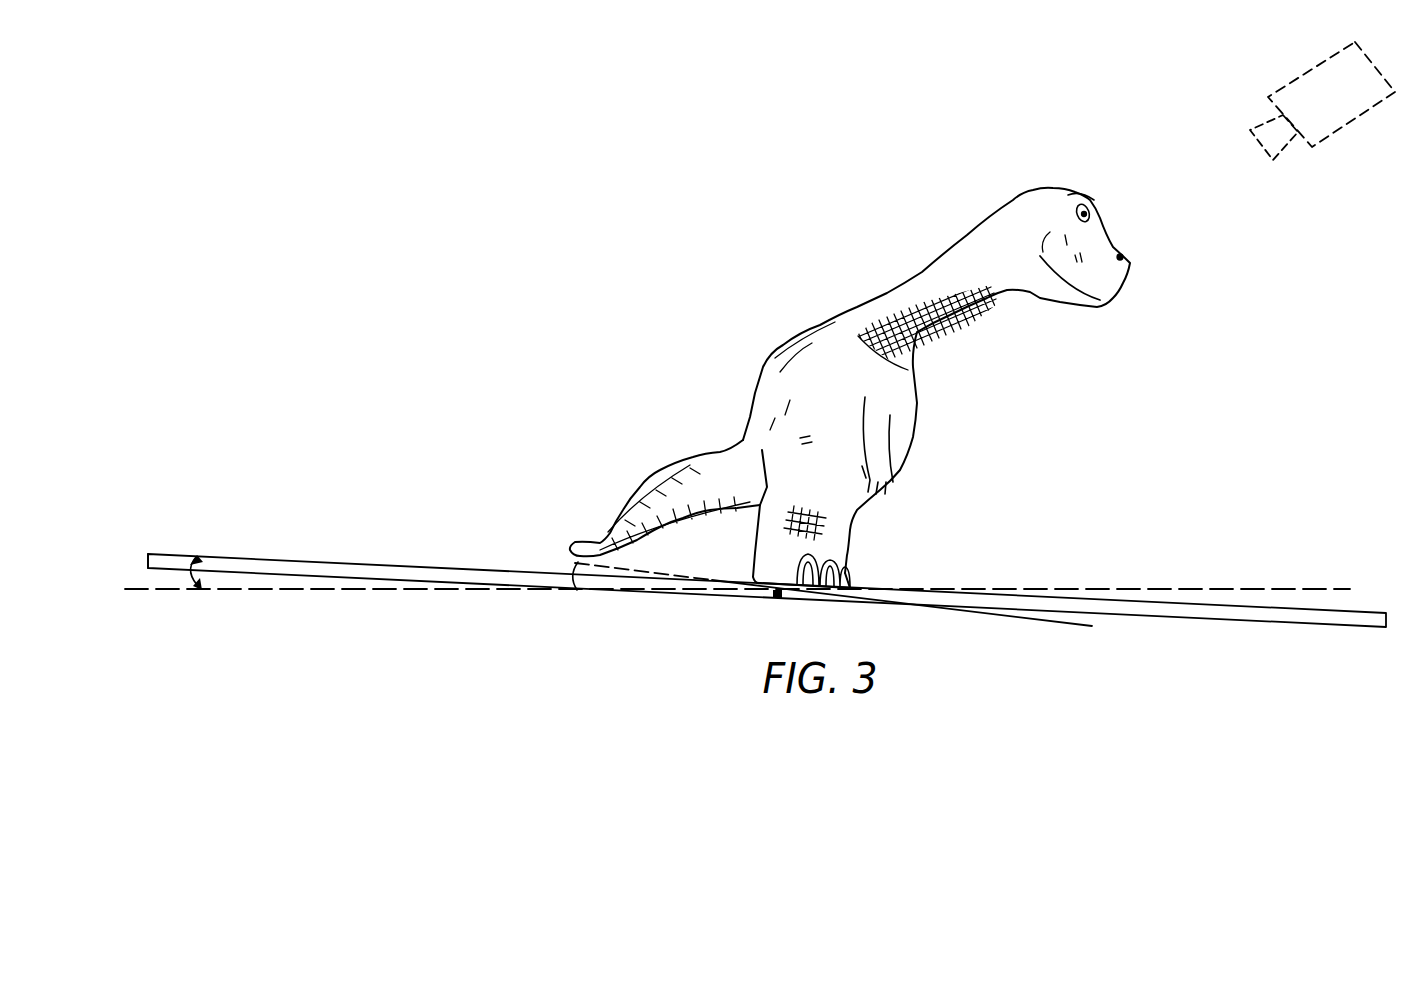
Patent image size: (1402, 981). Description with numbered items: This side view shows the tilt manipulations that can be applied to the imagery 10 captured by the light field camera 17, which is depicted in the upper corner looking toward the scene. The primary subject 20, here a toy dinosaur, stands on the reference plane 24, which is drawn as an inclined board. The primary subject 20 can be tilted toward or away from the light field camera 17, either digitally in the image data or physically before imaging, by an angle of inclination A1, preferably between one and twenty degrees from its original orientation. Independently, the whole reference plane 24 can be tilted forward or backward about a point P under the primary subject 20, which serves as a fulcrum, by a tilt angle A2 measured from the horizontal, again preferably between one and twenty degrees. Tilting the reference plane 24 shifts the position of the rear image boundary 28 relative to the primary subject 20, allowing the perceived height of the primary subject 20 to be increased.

The imagery 10 is at (843, 237).
The primary subject 20 is at (765, 363).
The reference plane 24 is at (352, 563).
The rear image boundary 28 is at (148, 556).
The angle of inclination A1 is at (573, 567).
The tilt angle A2 is at (192, 575).
The point P is at (774, 598).
The light field camera 17 is at (1347, 126).